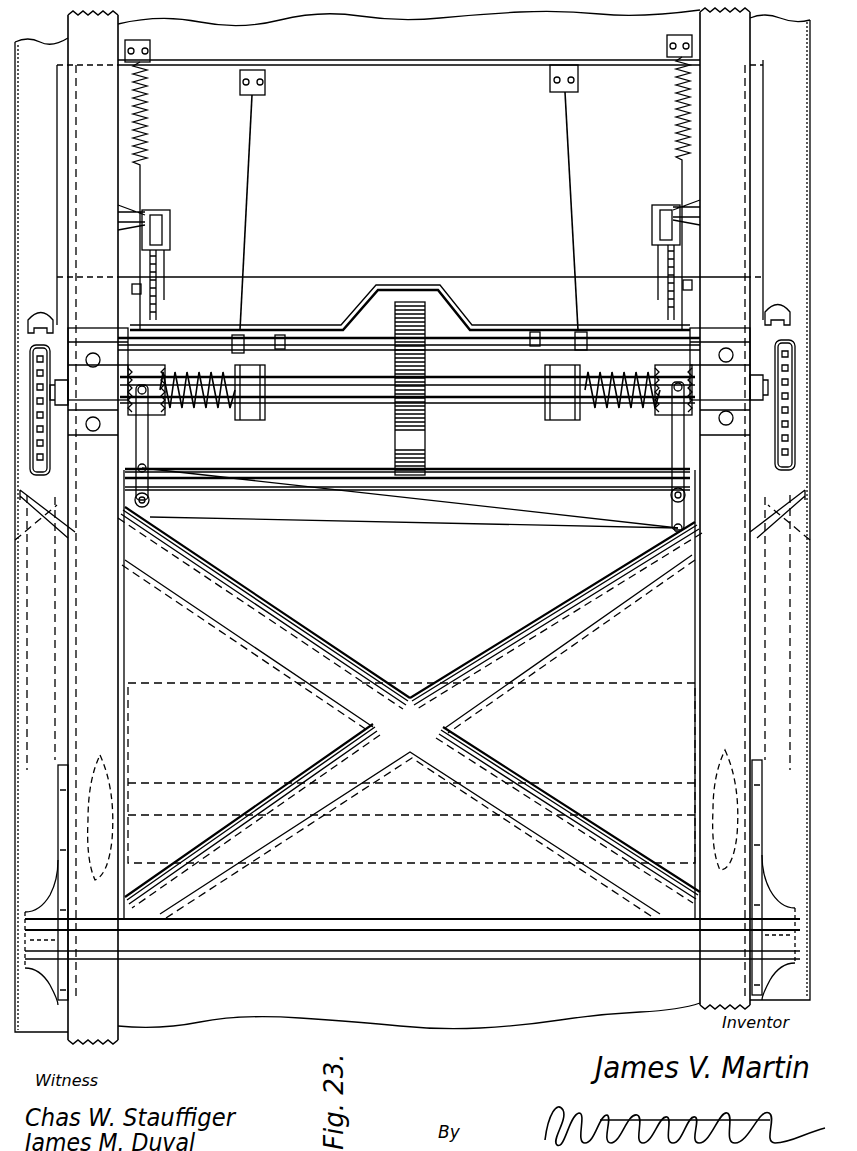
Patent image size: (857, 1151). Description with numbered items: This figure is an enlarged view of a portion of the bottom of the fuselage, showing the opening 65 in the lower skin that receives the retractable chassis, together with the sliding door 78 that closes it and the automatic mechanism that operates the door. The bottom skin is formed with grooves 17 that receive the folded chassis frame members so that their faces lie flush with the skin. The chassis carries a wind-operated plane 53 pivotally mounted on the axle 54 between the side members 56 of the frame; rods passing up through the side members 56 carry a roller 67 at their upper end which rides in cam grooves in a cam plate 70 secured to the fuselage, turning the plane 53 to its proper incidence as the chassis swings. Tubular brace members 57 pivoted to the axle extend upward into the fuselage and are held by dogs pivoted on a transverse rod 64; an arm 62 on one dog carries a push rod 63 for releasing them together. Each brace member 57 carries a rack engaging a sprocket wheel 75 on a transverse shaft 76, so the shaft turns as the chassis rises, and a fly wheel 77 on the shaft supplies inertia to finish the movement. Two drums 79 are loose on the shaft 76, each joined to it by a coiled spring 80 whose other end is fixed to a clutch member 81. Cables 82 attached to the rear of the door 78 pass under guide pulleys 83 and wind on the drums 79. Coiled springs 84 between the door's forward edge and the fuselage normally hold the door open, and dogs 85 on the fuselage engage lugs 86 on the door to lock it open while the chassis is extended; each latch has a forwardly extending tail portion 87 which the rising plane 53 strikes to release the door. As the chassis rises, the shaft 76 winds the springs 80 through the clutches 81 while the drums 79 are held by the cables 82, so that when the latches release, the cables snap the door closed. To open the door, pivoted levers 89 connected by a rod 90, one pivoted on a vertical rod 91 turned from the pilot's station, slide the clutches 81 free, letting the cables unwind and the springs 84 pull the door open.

The grooves or recesses 17 is at (318, 655).
The plane or aerofoil 53 is at (195, 682).
The axle 54 is at (238, 783).
The side members 56 is at (412, 815).
The tubular brace members 57 is at (38, 315).
The arm 62 is at (118, 300).
The push rod 63 is at (410, 297).
The transverse rod 64 is at (335, 292).
The opening 65 is at (355, 285).
The roller 67 is at (58, 910).
The cam plate 70 is at (60, 845).
The sprocket wheel 75 is at (55, 430).
The transverse shaft 76 is at (335, 405).
The fly wheel 77 is at (395, 428).
The sliding door 78 is at (409, 171).
The drums 79 is at (252, 422).
The coiled spring 80 is at (205, 412).
The clutch member 81 is at (165, 410).
The cables 82 is at (245, 198).
The guide pulleys 83 is at (232, 352).
The coiled springs 84 is at (147, 112).
The dogs 85 is at (166, 252).
The lugs 86 is at (170, 232).
The tail portion 87 is at (160, 298).
The pivoted levers 89 is at (148, 440).
The rod 90 is at (556, 516).
The vertical rod 91 is at (150, 505).